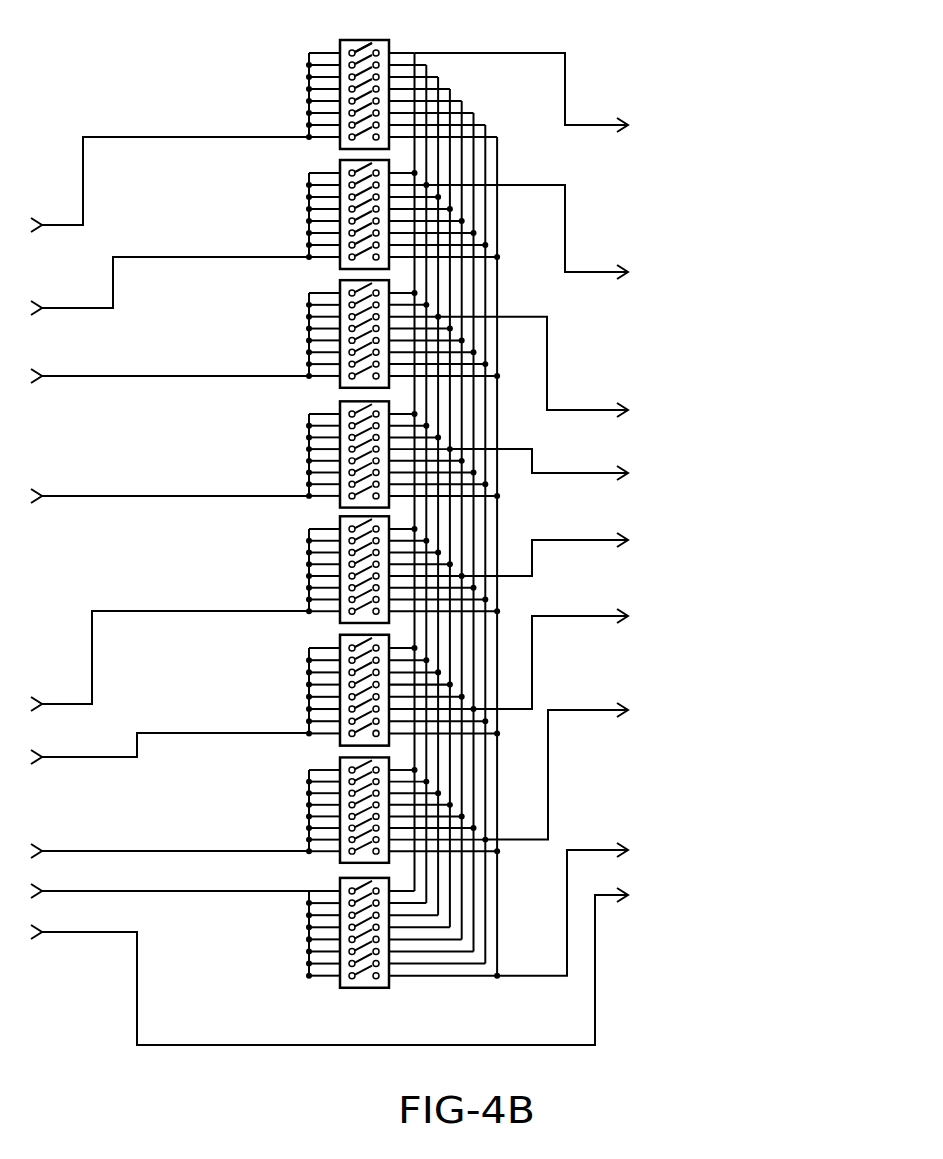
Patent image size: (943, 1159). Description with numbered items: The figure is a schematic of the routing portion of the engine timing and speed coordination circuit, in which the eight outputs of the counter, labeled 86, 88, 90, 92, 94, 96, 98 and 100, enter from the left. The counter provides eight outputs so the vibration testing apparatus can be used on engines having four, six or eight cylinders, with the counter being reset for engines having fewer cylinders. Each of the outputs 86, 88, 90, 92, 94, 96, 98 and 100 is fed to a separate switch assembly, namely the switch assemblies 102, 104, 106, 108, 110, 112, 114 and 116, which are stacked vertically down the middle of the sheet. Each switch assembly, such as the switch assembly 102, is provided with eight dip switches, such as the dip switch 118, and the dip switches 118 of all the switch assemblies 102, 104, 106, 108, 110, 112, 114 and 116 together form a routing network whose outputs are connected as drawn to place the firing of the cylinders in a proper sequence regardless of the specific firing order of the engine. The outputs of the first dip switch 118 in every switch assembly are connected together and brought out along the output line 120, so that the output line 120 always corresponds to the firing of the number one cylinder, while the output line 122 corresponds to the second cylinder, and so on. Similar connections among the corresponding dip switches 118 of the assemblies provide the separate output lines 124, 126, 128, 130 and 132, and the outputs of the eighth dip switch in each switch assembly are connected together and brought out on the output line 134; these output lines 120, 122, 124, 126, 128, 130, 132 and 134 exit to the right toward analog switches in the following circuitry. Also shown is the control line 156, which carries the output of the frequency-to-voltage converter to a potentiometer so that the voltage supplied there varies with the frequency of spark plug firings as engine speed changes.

The counter output 86 is at (60, 222).
The counter output 88 is at (82, 292).
The counter output 90 is at (74, 354).
The counter output 92 is at (84, 464).
The counter output 94 is at (58, 700).
The counter output 96 is at (78, 752).
The counter output 98 is at (84, 826).
The counter output 100 is at (100, 888).
The control line 156 is at (100, 928).
The switch assembly 102 is at (344, 40).
The switch assembly 104 is at (342, 165).
The switch assembly 106 is at (340, 283).
The switch assembly 108 is at (343, 404).
The switch assembly 110 is at (340, 522).
The switch assembly 112 is at (340, 640).
The switch assembly 114 is at (342, 760).
The switch assembly 116 is at (342, 880).
The dip switch 118 is at (362, 42).
The output line 120 is at (594, 122).
The output line 122 is at (592, 270).
The output line 124 is at (585, 408).
The output line 126 is at (588, 472).
The output line 128 is at (578, 538).
The output line 130 is at (578, 614).
The output line 132 is at (582, 708).
The output line 134 is at (592, 848).